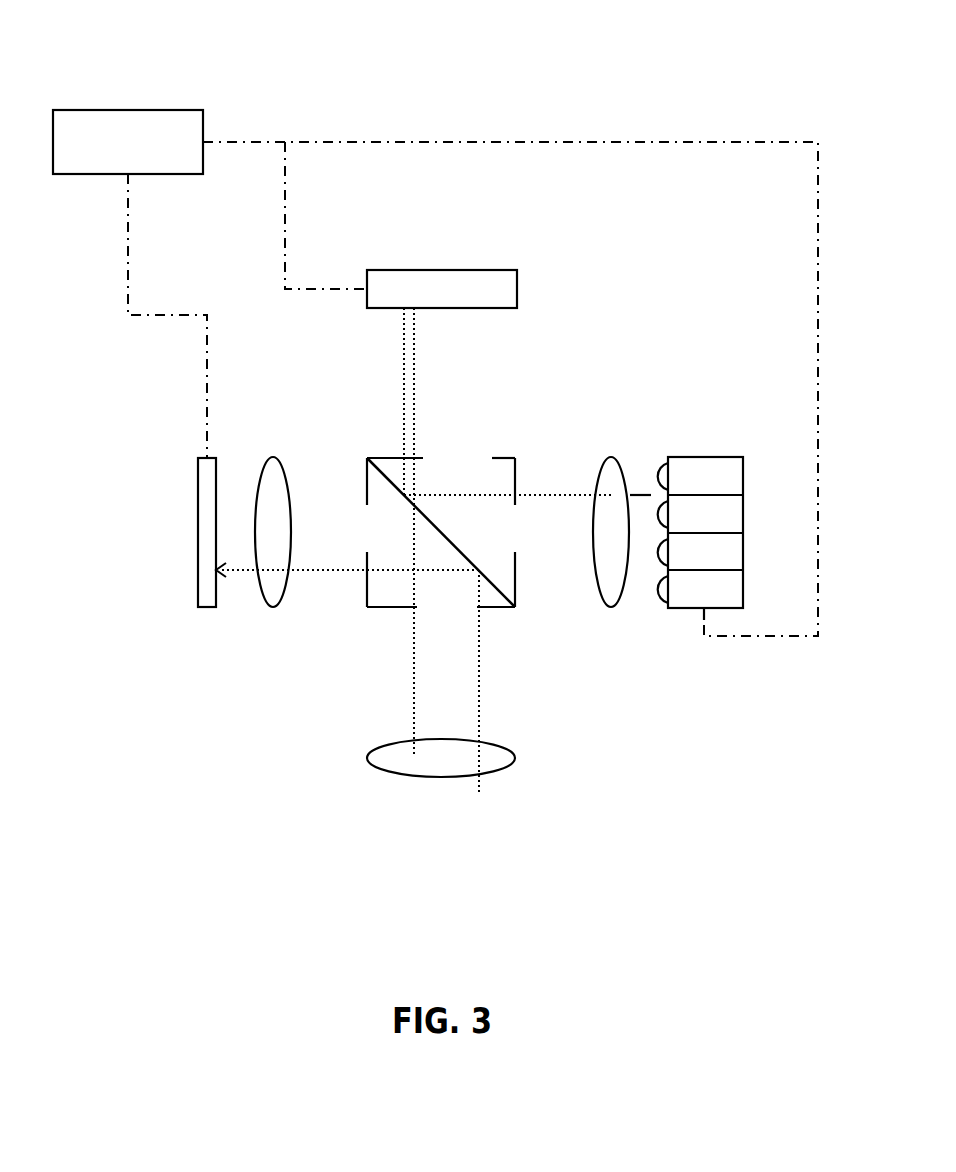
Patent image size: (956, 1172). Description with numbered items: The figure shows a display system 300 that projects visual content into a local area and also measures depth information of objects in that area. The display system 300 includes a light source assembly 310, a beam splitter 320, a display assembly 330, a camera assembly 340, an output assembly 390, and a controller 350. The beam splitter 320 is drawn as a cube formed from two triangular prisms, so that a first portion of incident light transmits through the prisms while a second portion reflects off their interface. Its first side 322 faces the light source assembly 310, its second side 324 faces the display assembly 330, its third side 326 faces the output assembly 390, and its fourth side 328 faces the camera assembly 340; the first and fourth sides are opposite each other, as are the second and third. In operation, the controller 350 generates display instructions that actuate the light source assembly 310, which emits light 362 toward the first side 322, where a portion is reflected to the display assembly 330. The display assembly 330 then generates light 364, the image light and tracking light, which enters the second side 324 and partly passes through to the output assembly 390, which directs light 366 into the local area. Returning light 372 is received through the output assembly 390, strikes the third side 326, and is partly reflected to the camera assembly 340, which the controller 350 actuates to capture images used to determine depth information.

The display system 300 is at (421, 87).
The controller 350 is at (111, 166).
The display assembly 330 is at (517, 287).
The light 364 is at (413, 347).
The beam splitter 320 is at (367, 457).
The first side 322 is at (495, 547).
The second side 324 is at (439, 467).
The third side 326 is at (429, 619).
The fourth side 328 is at (349, 537).
The light 362 is at (530, 495).
The light source assembly 310 is at (592, 440).
The camera assembly 340 is at (298, 612).
The light 372 is at (479, 640).
The output assembly 390 is at (515, 758).
The light 366 is at (421, 783).